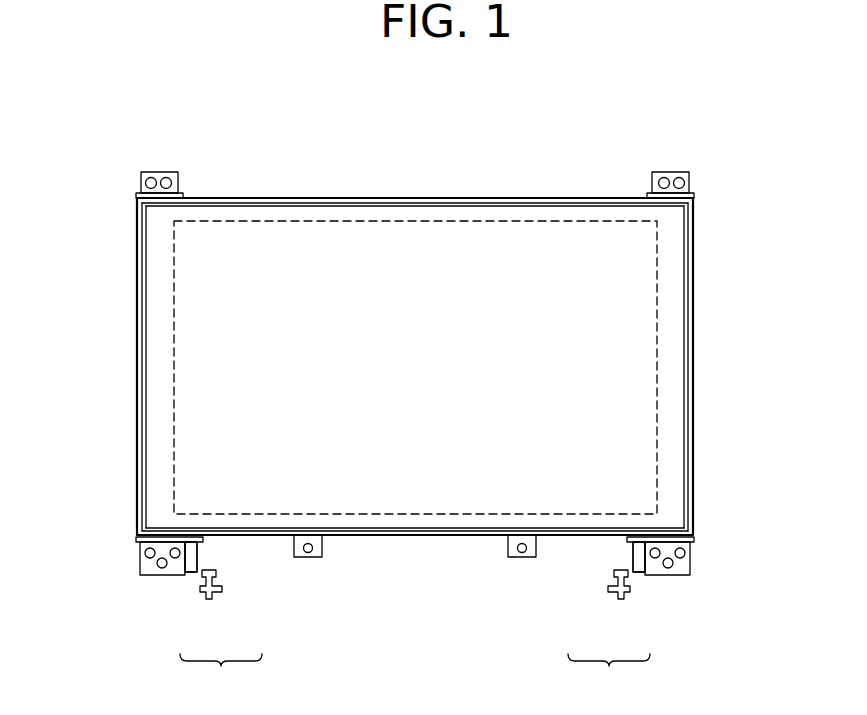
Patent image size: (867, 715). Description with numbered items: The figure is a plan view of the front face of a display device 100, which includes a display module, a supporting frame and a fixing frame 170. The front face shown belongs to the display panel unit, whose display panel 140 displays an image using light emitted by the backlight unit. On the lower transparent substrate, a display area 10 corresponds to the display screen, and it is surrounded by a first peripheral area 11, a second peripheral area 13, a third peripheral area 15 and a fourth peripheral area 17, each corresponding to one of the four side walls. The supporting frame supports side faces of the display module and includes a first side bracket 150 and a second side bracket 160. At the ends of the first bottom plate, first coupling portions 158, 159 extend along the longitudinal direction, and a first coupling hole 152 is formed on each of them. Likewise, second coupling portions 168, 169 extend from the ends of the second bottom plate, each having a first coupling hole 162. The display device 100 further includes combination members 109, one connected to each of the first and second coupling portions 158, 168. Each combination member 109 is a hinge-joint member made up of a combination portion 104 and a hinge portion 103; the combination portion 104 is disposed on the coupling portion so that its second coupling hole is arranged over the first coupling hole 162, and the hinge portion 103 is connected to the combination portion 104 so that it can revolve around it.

The display device 100 is at (460, 95).
The display area 10 is at (427, 364).
The first peripheral area 11 is at (426, 523).
The second peripheral area 13 is at (476, 215).
The third peripheral area 15 is at (160, 362).
The fourth peripheral area 17 is at (668, 364).
The display panel 140 is at (640, 405).
The first side bracket 150 is at (139, 300).
The second side bracket 160 is at (692, 300).
The first coupling portion 159 is at (141, 183).
The second coupling portion 169 is at (689, 184).
The first coupling hole 152 is at (143, 549).
The first coupling portion 158 is at (139, 566).
The first coupling hole 162 is at (687, 550).
The second coupling portion 168 is at (691, 566).
The hinge portion 103 is at (204, 585).
The combination portion 104 is at (203, 548).
The combination member 109 is at (415, 672).
The fixing frame 170 is at (304, 557).